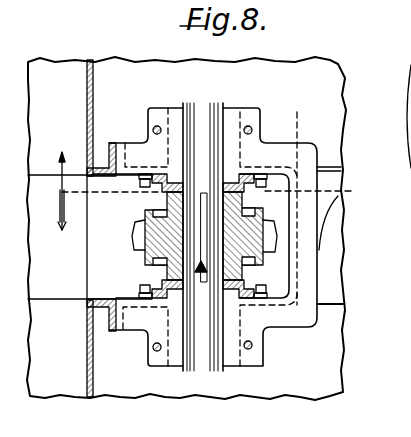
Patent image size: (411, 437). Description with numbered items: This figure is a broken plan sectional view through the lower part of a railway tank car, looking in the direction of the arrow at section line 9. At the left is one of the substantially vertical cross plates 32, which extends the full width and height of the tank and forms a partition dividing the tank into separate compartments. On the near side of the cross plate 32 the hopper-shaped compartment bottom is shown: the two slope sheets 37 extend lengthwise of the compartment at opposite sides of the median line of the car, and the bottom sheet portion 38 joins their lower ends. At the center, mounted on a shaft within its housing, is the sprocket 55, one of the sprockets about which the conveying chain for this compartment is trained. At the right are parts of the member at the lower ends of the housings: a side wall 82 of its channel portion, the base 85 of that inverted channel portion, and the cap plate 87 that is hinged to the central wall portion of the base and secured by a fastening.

The section line 9 is at (62, 192).
The cross plate 32 is at (94, 96).
The slope sheet 37 is at (186, 228).
The bottom sheet portion 38 is at (90, 237).
The sprocket 55 is at (145, 250).
The side wall 82 is at (321, 166).
The base 85 is at (328, 184).
The cap plate 87 is at (328, 238).